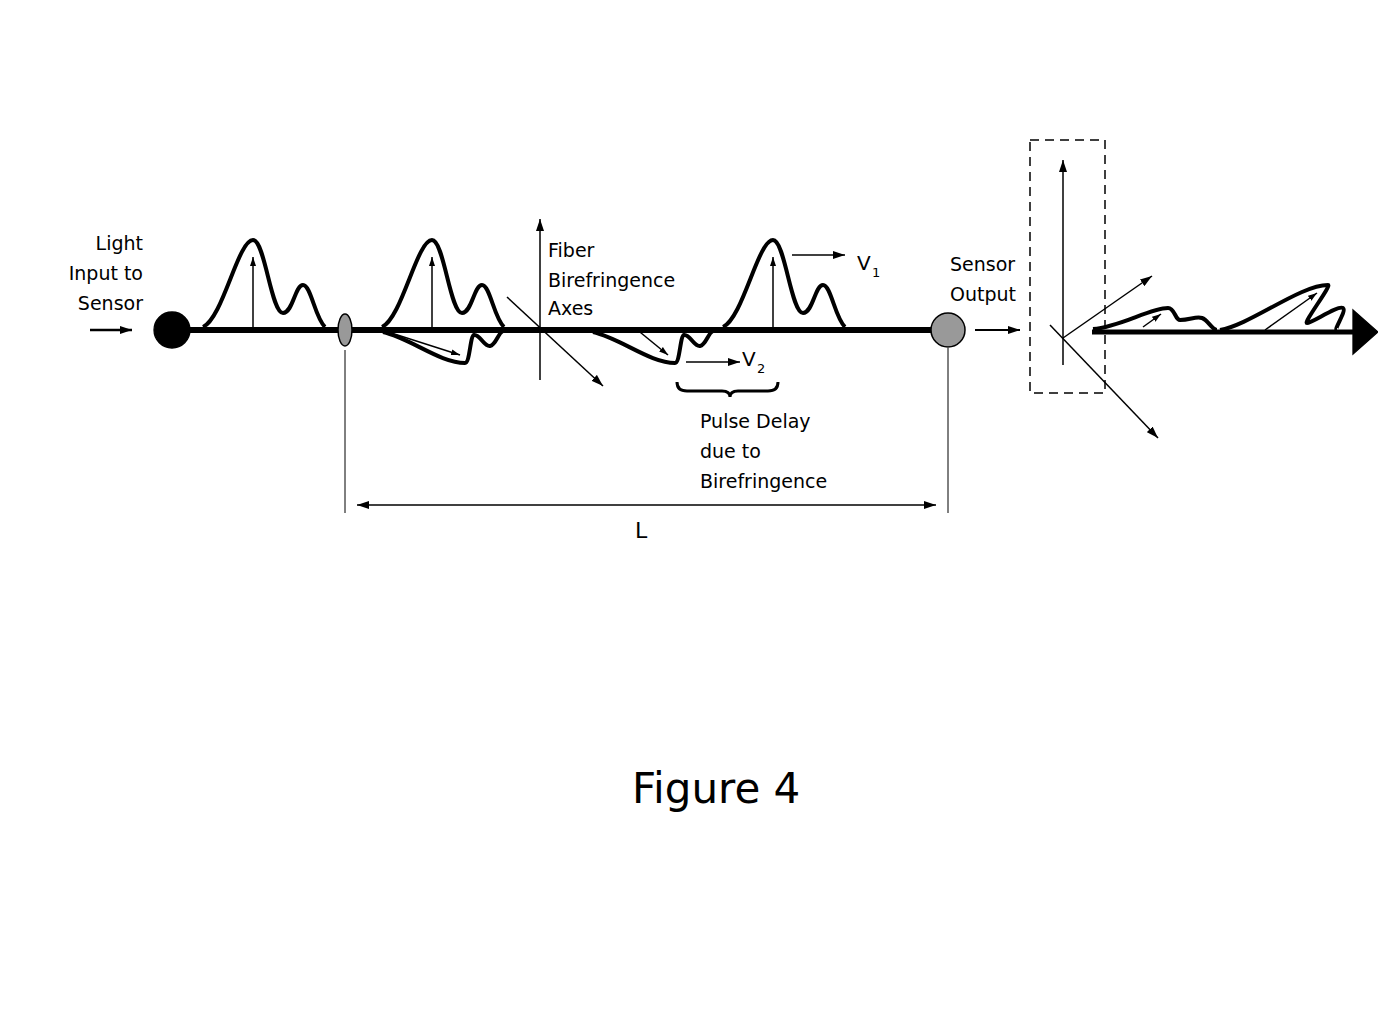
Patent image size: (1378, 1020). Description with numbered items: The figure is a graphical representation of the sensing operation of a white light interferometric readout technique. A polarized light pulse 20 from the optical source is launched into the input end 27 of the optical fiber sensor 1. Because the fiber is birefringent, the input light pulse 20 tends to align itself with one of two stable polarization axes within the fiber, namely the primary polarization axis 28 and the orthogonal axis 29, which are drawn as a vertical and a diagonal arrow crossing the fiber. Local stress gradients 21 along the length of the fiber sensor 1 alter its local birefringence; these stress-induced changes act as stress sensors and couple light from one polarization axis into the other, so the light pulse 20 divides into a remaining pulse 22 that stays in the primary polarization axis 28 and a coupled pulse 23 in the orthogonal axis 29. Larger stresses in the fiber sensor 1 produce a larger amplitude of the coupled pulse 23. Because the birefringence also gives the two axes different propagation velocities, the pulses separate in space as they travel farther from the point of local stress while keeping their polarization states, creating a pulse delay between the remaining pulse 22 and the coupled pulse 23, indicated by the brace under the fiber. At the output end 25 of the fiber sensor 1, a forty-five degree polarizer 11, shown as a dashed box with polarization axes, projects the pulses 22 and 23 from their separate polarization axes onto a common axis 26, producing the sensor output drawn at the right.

The optical fiber sensor 1 is at (225, 335).
The 45° polarizer 11 is at (1030, 168).
The polarized light pulse 20 is at (253, 237).
The local stress gradients 21 is at (345, 313).
The remaining pulse 22 is at (433, 237).
The coupled pulse 23 is at (462, 367).
The output end 25 is at (942, 315).
The common axis 26 is at (1140, 278).
The input end 27 is at (162, 340).
The primary polarization axis 28 is at (540, 243).
The orthogonal axis 29 is at (585, 378).